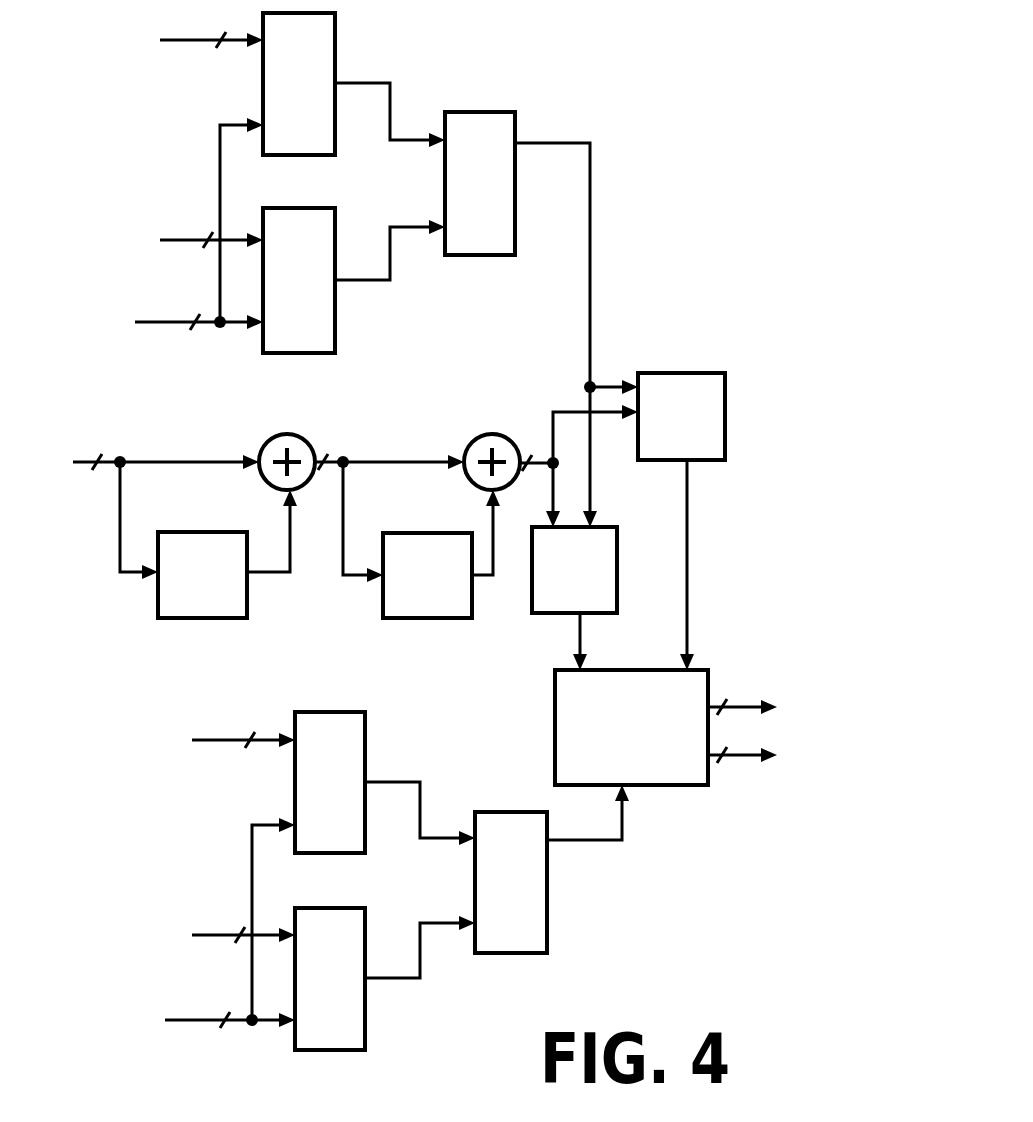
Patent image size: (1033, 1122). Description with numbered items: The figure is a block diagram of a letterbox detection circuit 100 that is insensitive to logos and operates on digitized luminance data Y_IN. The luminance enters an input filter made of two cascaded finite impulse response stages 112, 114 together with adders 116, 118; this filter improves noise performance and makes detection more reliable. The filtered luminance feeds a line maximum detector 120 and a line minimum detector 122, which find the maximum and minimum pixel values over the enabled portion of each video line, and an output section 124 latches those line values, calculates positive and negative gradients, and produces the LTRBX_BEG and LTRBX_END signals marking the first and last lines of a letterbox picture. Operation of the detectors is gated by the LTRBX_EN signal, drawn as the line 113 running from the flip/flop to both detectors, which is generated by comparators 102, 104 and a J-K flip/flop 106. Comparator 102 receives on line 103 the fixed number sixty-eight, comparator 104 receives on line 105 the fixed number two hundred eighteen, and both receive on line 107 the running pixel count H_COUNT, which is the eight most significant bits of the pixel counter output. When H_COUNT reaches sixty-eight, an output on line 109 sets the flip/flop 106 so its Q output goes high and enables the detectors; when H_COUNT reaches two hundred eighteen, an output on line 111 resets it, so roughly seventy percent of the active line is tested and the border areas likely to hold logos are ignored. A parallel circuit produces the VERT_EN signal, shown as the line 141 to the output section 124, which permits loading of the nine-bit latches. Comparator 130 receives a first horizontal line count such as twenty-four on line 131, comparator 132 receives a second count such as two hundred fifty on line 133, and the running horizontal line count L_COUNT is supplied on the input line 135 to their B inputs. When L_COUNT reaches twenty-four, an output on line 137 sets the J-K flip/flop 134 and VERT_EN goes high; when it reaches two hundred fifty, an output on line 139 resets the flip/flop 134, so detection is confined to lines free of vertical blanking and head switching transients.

The letterbox detection circuit 100 is at (180, 530).
The comparator 102 is at (285, 156).
The line 103 is at (193, 41).
The comparator 104 is at (293, 354).
The line 105 is at (188, 238).
The J-K flip/flop 106 is at (480, 257).
The line 107 is at (173, 323).
The line 109 is at (358, 83).
The line 111 is at (358, 280).
The finite impulse response stage 112 is at (222, 532).
The LTRBX_EN signal line 113 is at (590, 229).
The finite impulse response stage 114 is at (445, 533).
The adder 116 is at (268, 443).
The adder 118 is at (472, 443).
The line maximum detector 120 is at (668, 373).
The line minimum detector 122 is at (560, 613).
The output section 124 is at (554, 729).
The comparator 130 is at (318, 855).
The line 131 is at (218, 741).
The comparator 132 is at (325, 1051).
The line 133 is at (216, 932).
The J-K flip/flop 134 is at (510, 955).
The L_COUNT input 135 is at (200, 1022).
The line 137 is at (390, 782).
The line 139 is at (390, 978).
The VERT_EN signal line 141 is at (622, 830).